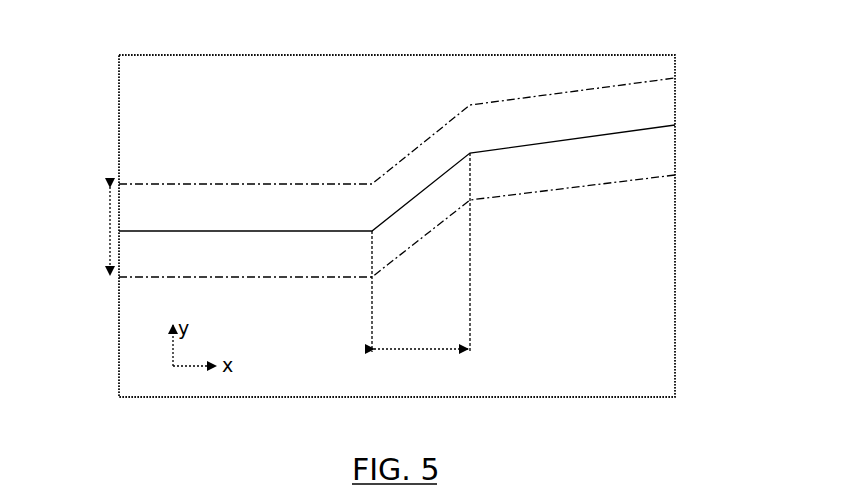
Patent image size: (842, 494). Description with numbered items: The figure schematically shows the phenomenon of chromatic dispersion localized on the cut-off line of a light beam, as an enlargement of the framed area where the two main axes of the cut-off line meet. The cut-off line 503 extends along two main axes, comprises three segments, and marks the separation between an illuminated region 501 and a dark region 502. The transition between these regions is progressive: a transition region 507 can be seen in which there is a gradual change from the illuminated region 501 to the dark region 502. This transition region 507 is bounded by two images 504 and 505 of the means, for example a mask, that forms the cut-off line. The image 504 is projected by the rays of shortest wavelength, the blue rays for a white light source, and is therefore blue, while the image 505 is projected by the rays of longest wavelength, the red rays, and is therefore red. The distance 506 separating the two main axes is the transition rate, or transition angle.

The illuminated region 501 is at (185, 103).
The dark region 502 is at (580, 382).
The cut-off line 503 is at (625, 133).
The image formed by the shortest-wavelength rays 504 is at (517, 98).
The image formed by the longest-wavelength rays 505 is at (555, 188).
The distance between the two main axes 506 is at (413, 353).
The transition region 507 is at (108, 234).